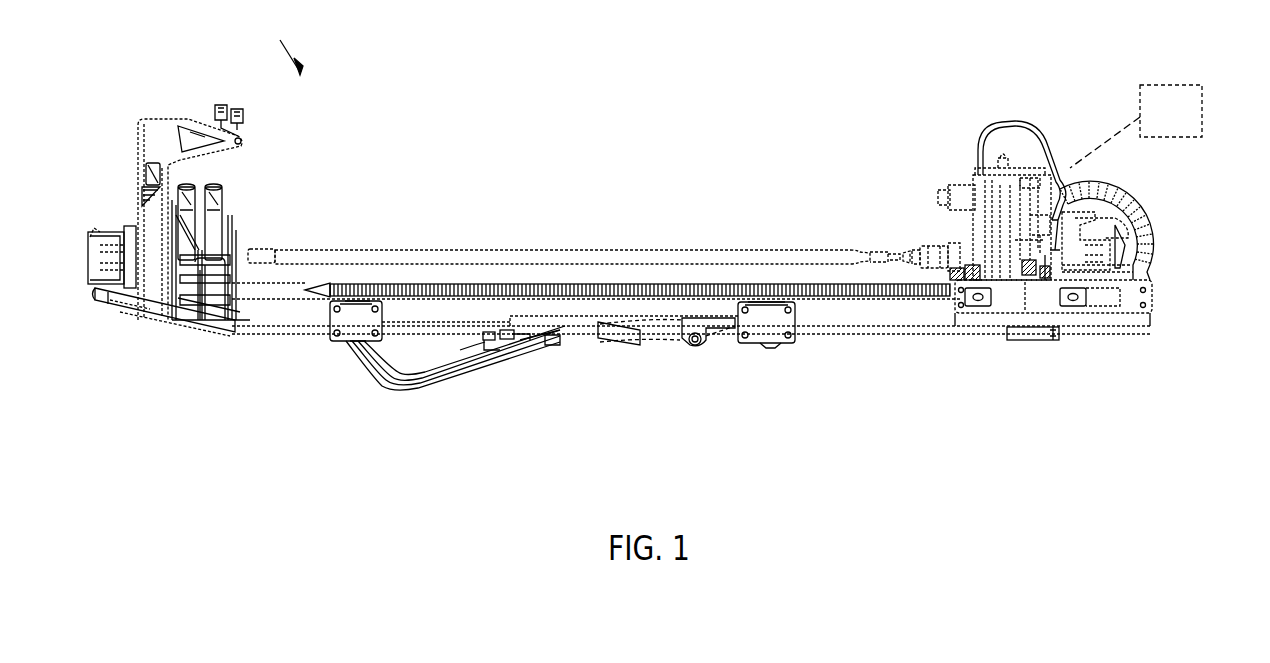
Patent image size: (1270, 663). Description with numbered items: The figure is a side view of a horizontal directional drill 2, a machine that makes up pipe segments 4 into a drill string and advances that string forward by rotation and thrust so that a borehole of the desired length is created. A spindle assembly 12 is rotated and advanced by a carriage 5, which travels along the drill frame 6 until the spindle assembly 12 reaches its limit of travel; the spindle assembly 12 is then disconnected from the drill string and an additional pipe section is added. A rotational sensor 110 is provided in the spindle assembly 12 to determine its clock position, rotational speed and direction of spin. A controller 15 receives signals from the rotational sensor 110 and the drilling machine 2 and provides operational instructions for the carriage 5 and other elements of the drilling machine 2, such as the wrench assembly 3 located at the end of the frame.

The horizontal directional drill 2 is at (280, 40).
The wrench assembly 3 is at (190, 190).
The pipe segments 4 is at (442, 250).
The carriage 5 is at (1098, 305).
The drill frame 6 is at (845, 328).
The spindle assembly 12 is at (925, 252).
The rotational sensor 110 is at (972, 235).
The controller 15 is at (1180, 85).